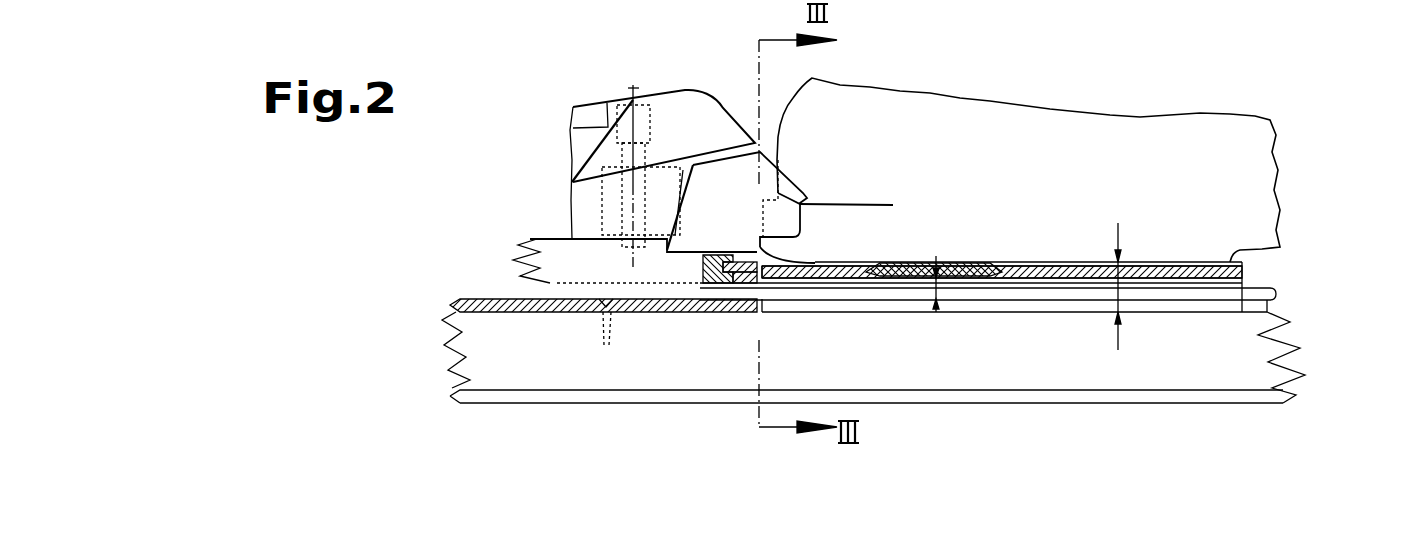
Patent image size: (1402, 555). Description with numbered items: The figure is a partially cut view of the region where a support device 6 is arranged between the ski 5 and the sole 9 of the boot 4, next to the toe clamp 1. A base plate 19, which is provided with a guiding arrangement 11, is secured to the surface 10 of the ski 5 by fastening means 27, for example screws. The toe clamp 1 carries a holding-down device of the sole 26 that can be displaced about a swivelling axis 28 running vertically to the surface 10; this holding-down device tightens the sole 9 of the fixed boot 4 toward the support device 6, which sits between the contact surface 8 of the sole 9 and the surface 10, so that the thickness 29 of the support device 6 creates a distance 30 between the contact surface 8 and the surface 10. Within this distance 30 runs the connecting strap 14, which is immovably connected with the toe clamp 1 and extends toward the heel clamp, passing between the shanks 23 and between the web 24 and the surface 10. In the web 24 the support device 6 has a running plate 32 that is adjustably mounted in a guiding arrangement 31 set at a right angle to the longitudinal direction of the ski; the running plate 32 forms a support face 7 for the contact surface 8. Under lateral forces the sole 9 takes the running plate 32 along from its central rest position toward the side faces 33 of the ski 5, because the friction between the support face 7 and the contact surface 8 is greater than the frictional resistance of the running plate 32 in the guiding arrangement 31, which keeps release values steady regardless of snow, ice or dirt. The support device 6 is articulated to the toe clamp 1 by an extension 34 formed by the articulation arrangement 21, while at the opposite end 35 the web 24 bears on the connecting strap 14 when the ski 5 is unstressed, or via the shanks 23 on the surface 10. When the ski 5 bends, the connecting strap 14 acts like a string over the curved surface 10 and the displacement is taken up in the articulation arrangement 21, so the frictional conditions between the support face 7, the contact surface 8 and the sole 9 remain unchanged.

The toe clamp 1 is at (673, 120).
The boot 4 is at (1236, 162).
The ski 5 is at (917, 345).
The support device 6 is at (1292, 258).
The support face 7 is at (931, 258).
The contact surface 8 is at (840, 284).
The sole 9 is at (836, 215).
The surface 10 is at (1268, 310).
The guiding arrangement 11 is at (583, 282).
The connecting strap 14 is at (1187, 290).
The base plate 19 is at (493, 300).
The articulation arrangement 21 is at (680, 274).
The shanks 23 is at (877, 308).
The web 24 is at (1200, 262).
The holding-down device of the sole 26 is at (738, 188).
The fastening means 27 is at (607, 345).
The swivelling axis 28 is at (632, 88).
The thickness 29 is at (944, 288).
The distance 30 is at (1120, 288).
The guiding arrangement 31 is at (1006, 254).
The running plate 32 is at (956, 262).
The side faces 33 is at (655, 348).
The extension 34 is at (725, 284).
The end 35 is at (1227, 333).